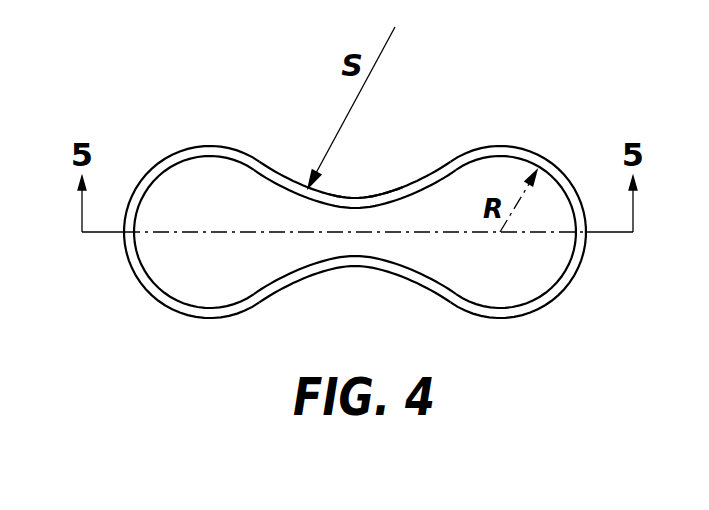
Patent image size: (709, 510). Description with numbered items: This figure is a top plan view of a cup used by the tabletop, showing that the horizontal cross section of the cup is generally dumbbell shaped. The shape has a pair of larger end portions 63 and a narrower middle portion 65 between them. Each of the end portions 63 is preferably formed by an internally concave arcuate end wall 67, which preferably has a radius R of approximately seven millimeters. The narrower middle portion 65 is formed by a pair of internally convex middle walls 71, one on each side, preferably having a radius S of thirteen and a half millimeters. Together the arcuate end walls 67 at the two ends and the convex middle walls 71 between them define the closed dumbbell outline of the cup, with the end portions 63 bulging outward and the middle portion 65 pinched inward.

The end portion 63 is at (355, 211).
The middle portion 65 is at (397, 188).
The arcuate end wall 67 is at (169, 158).
The middle wall 71 is at (265, 166).